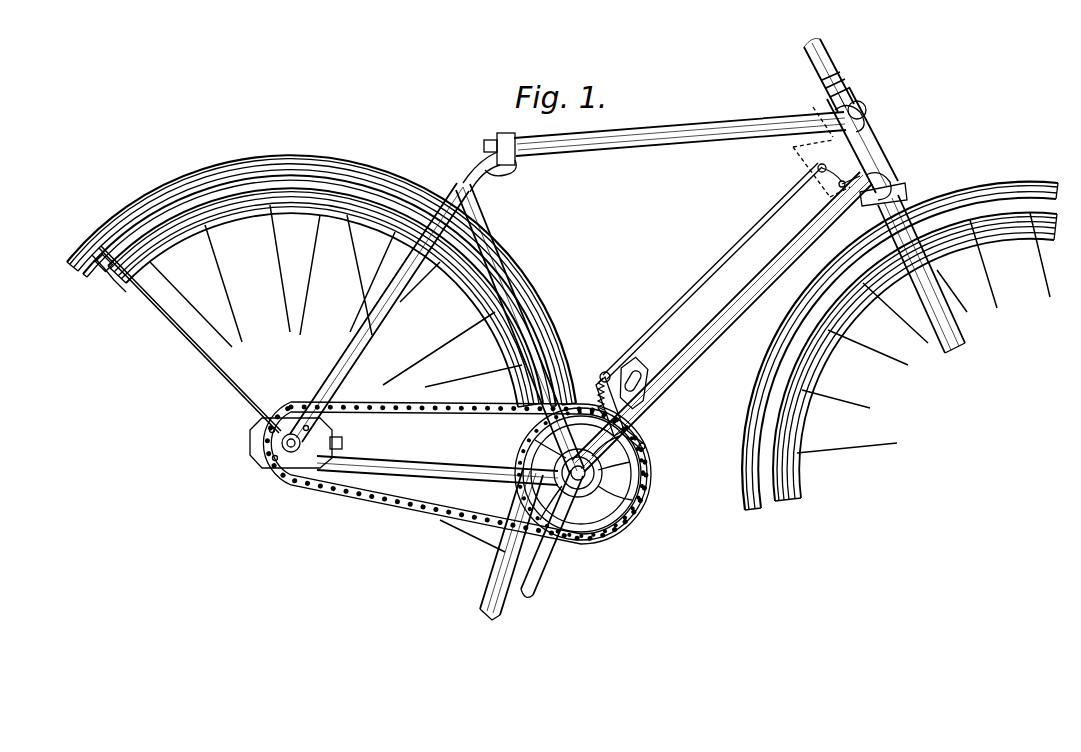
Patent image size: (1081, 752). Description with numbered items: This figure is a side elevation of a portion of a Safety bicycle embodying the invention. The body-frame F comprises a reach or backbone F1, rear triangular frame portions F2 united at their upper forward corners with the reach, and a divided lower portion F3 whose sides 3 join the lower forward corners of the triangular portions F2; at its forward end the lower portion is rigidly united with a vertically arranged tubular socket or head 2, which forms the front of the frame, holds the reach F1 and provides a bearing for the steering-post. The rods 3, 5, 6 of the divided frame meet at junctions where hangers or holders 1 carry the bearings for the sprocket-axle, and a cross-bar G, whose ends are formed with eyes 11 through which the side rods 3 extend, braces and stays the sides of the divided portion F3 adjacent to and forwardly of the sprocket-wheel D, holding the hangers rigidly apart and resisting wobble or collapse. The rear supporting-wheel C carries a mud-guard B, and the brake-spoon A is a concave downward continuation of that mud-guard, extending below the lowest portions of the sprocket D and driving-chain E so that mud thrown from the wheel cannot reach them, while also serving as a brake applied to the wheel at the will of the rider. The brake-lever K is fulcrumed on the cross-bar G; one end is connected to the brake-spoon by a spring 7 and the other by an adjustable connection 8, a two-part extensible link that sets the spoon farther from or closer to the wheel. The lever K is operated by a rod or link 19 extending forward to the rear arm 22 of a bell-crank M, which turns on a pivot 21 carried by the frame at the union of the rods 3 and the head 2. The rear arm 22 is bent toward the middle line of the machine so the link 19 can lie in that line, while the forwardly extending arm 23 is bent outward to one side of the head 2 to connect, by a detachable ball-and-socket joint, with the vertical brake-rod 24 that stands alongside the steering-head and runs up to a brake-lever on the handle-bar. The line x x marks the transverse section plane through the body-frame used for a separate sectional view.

The mud-guard B is at (321, 267).
The rear supporting-wheel C is at (321, 370).
The rod of the divided body-frame 6 is at (372, 468).
The driving-chain E is at (457, 473).
The rear triangular frame portions F2 is at (403, 297).
The rod of the divided body-frame 5 is at (503, 237).
The reach or backbone F1 is at (656, 146).
The frame F is at (675, 114).
The divided lower portion of the frame F3 is at (722, 322).
The side rods 3 is at (756, 307).
The rod or link 19 is at (711, 272).
The forwardly-extending arm of the bell-crank 23 is at (867, 143).
The vertical brake-rod 24 is at (813, 67).
The tubular frame portion or socket 2 is at (870, 140).
The rear arm of the bell-crank 22 is at (821, 168).
The pivot of the bell-crank 21 is at (835, 164).
The bell-crank M is at (836, 187).
The section line x is at (824, 169).
The adjustable connection 8 is at (602, 478).
The sprocket-wheel D is at (581, 474).
The brake-spoon A is at (552, 533).
The hanger or holder 1 is at (505, 560).
The brake-lever K is at (636, 364).
The spring 7 is at (597, 383).
The cross-bar G is at (622, 444).
The eyes 11 is at (648, 438).